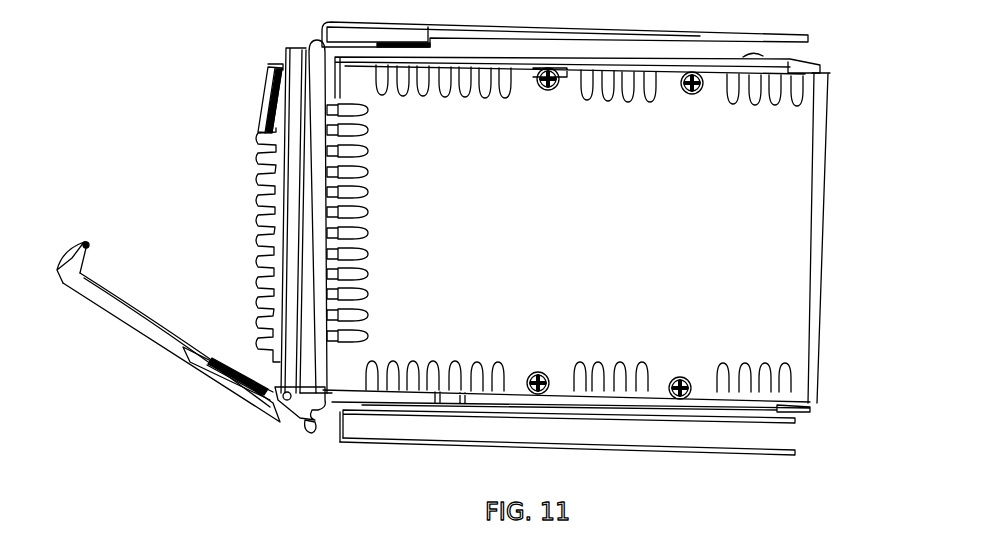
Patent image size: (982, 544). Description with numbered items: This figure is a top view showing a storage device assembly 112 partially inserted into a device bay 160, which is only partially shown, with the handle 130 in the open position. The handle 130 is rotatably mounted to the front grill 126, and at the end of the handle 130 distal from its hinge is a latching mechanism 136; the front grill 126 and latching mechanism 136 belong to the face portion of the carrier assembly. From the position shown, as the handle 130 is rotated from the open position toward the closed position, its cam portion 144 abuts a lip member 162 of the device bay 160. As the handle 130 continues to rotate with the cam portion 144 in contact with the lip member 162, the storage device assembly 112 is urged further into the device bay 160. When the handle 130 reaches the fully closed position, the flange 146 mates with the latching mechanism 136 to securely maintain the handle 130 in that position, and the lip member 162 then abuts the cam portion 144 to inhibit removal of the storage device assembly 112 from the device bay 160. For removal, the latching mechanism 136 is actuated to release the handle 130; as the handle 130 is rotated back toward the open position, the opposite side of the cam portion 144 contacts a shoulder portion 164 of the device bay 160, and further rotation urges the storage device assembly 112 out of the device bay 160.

The storage device assembly 112 is at (805, 232).
The front grill 126 is at (258, 222).
The handle 130 is at (147, 350).
The latching mechanism 136 is at (260, 98).
The cam portion 144 is at (300, 422).
The flange 146 is at (78, 237).
The device bay 160 is at (690, 452).
The lip member 162 is at (305, 437).
The shoulder portion 164 is at (360, 440).